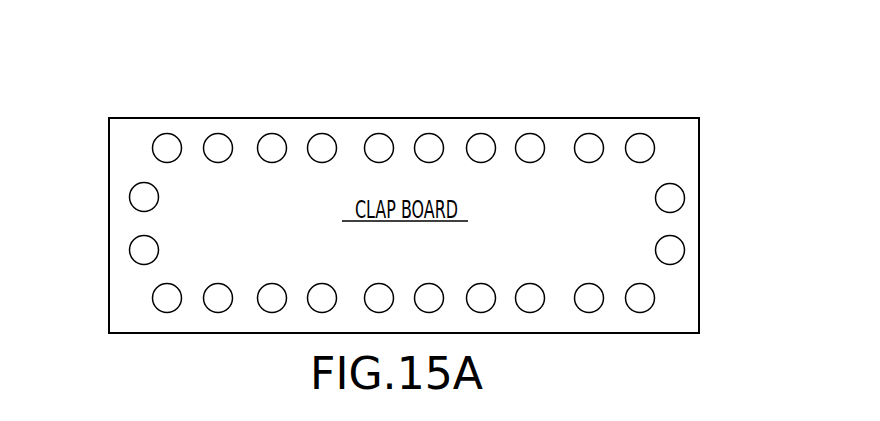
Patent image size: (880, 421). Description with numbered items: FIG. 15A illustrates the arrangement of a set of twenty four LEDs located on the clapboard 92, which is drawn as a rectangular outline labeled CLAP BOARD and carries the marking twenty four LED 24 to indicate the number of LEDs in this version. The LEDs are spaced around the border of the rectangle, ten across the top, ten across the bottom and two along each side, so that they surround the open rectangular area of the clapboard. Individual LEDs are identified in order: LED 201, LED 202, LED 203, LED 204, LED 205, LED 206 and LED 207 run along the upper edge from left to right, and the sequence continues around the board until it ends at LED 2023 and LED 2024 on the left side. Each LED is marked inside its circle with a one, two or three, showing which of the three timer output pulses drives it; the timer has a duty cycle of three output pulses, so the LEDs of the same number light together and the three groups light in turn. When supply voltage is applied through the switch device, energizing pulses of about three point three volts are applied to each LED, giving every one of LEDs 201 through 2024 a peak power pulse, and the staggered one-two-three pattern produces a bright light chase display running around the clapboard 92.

The LED 201 is at (161, 134).
The LED 202 is at (218, 134).
The LED 203 is at (280, 134).
The LED 204 is at (333, 134).
The LED 205 is at (387, 134).
The LED 206 is at (438, 134).
The LED 207 is at (490, 134).
The LED 2023 is at (131, 254).
The LED 2024 is at (130, 194).
The LEDs (24 LED) 24 is at (419, 223).
The clap board 92 is at (699, 158).